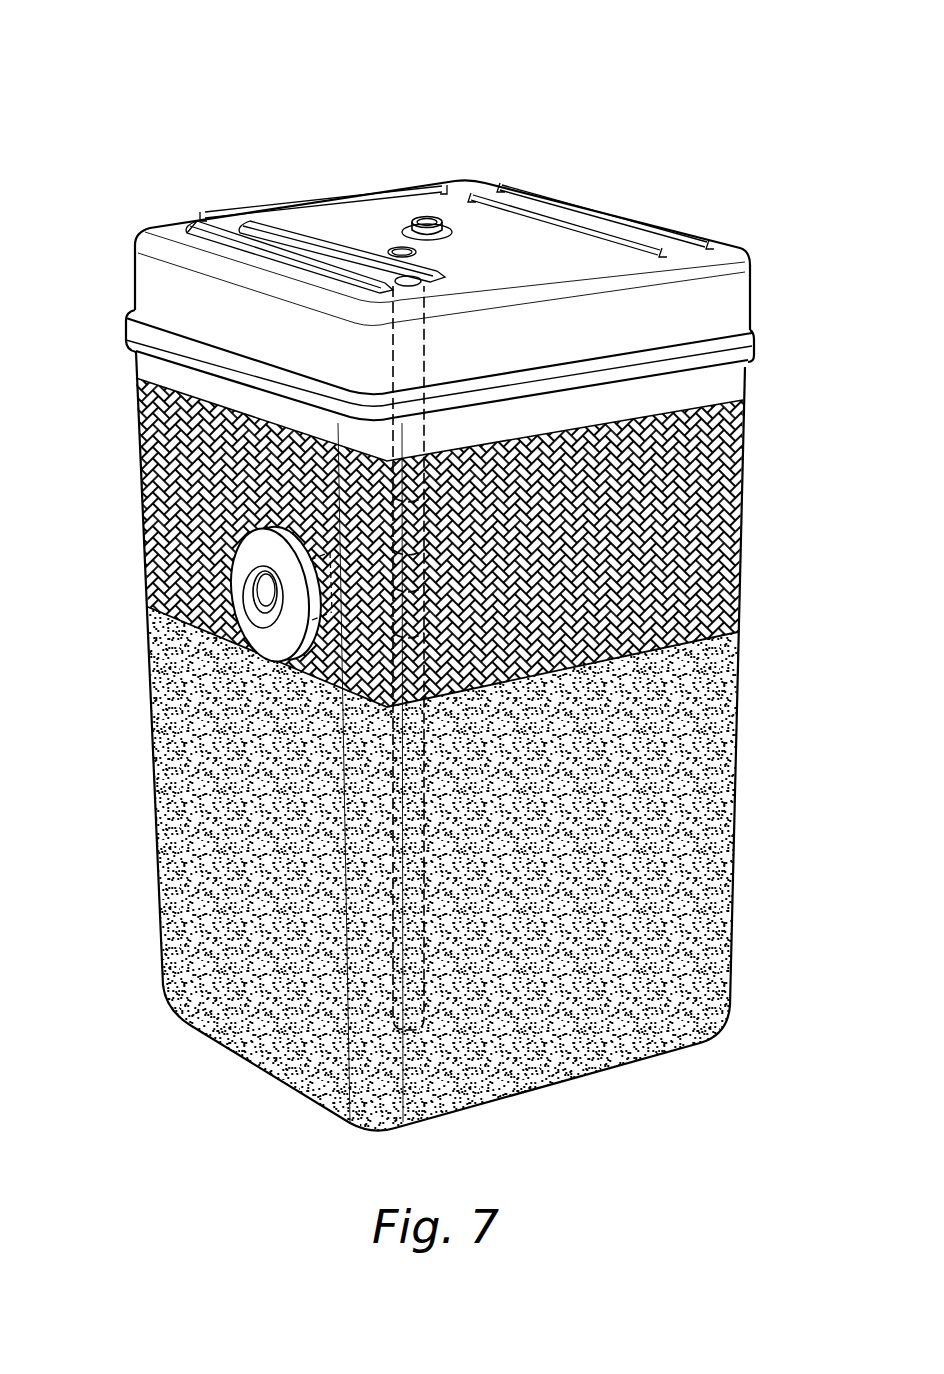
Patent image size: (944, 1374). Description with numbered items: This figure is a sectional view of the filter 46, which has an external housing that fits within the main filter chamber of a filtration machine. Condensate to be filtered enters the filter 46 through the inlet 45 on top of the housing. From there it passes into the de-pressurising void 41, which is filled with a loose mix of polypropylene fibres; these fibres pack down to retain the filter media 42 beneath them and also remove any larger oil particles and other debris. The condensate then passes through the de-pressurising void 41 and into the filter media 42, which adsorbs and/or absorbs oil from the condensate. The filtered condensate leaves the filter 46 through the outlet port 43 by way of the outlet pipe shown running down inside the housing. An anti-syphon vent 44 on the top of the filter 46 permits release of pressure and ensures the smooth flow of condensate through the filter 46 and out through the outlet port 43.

The de-pressurising void 41 is at (717, 525).
The filter media 42 is at (705, 820).
The outlet port 43 is at (252, 600).
The anti-syphon vent 44 is at (395, 250).
The inlet 45 is at (430, 219).
The filter 46 is at (145, 128).